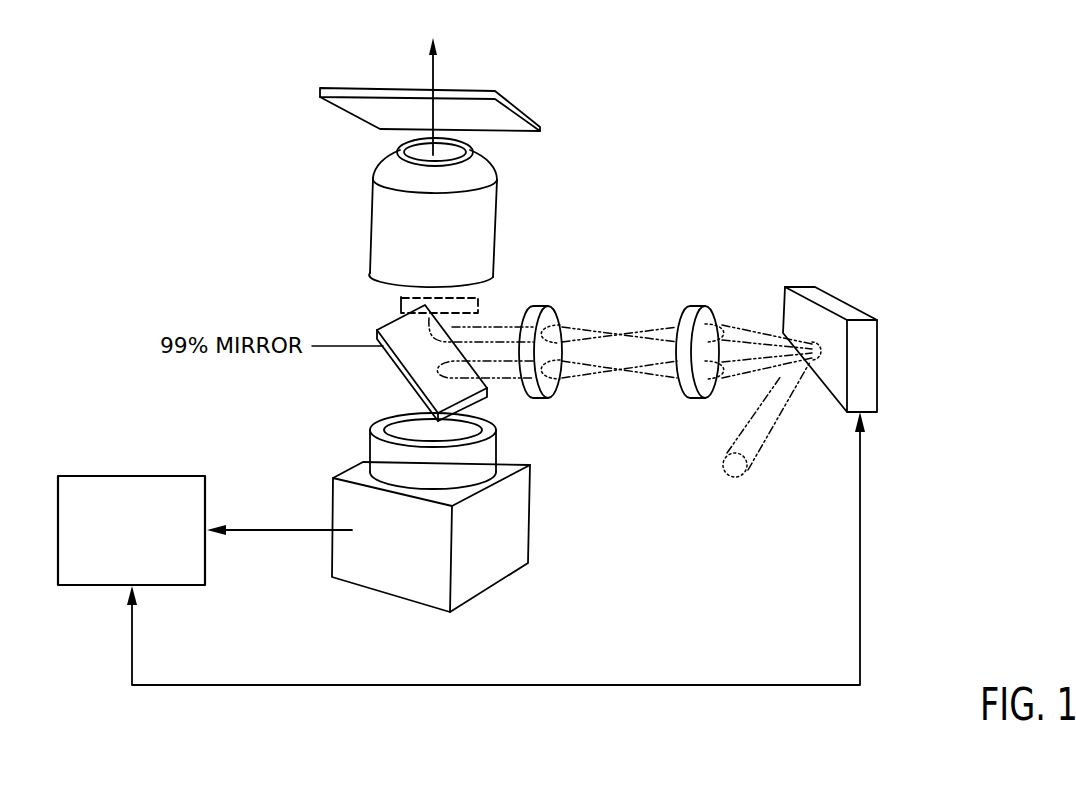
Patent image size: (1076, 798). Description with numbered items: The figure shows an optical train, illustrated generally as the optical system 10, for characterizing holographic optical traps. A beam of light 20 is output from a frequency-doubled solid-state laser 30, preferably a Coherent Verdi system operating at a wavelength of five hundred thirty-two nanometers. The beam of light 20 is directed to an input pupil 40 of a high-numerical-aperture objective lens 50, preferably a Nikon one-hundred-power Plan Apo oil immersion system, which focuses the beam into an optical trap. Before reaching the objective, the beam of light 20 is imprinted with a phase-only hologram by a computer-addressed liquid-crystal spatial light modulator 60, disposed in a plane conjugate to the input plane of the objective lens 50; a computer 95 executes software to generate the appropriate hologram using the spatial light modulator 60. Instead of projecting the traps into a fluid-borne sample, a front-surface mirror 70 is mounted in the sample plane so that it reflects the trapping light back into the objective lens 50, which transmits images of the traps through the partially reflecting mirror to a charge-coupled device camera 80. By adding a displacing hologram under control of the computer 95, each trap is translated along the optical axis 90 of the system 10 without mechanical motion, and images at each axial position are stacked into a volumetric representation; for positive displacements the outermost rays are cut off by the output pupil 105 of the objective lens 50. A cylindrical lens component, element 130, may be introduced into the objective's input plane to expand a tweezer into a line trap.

The optical system 10 is at (752, 124).
The beam of light 20 is at (703, 392).
The frequency-doubled solid-state laser 30 is at (730, 468).
The input pupil 40 is at (430, 219).
The high-numerical-aperture objective lens 50 is at (392, 224).
The spatial light modulator 60 is at (860, 355).
The front-surface mirror 70 is at (377, 113).
The charge-coupled device camera 80 is at (508, 522).
The optical axis 90 is at (433, 68).
The computer 95 is at (144, 540).
The output pupil 105 is at (448, 156).
The cylindrical lens component 130 is at (396, 305).